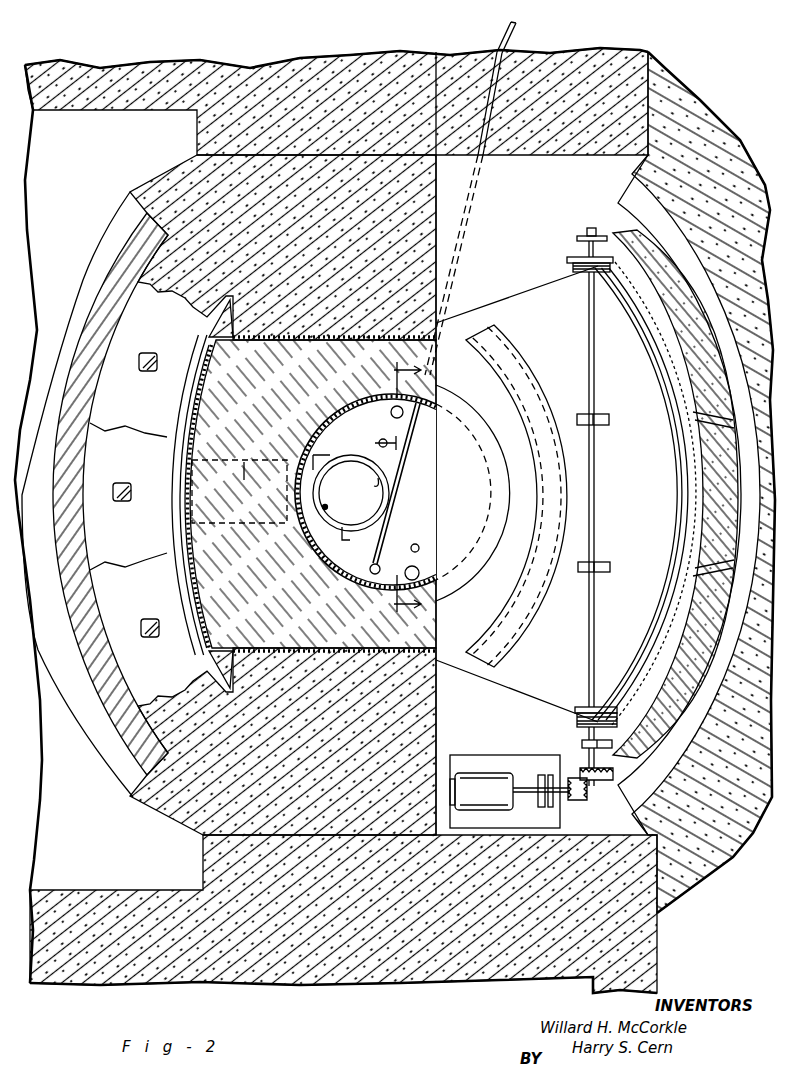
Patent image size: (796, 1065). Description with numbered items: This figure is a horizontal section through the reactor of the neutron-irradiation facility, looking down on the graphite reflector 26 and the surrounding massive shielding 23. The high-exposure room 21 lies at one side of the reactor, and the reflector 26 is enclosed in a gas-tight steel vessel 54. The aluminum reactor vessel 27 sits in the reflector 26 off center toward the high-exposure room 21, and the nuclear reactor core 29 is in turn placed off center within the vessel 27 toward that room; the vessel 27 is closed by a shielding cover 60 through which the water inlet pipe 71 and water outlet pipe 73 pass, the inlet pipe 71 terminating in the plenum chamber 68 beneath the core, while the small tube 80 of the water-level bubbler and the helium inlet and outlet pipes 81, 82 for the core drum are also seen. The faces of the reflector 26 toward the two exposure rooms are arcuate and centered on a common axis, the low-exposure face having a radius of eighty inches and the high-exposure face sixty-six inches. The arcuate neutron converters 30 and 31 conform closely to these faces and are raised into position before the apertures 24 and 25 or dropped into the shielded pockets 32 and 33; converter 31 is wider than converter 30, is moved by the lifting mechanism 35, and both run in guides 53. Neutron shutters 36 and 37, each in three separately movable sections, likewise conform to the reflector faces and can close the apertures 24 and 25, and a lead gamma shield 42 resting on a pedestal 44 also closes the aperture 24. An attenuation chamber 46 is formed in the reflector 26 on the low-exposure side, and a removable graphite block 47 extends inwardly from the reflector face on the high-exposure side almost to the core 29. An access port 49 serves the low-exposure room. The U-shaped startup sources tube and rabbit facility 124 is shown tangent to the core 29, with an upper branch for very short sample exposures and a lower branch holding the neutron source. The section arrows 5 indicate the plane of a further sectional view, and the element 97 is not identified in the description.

The high-exposure room 21 is at (88, 194).
The massive shielding 23 is at (553, 70).
The aperture 24 is at (133, 795).
The aperture 25 is at (642, 811).
The graphite reflector 26 is at (276, 588).
The aluminum reactor vessel 27 is at (337, 415).
The nuclear reactor core 29 is at (363, 493).
The neutron converter 30 is at (193, 558).
The neutron converter 31 is at (696, 477).
The shielded pocket 32 is at (205, 618).
The shielded pocket 33 is at (686, 501).
The lifting mechanism 35 is at (564, 745).
The neutron shutter 36 is at (142, 406).
The neutron shutter 37 is at (712, 312).
The lead gamma shield 42 is at (120, 716).
The pedestal 44 is at (88, 252).
The attenuation chamber 46 is at (521, 372).
The removable block of graphite 47 is at (244, 460).
The access port 49 is at (707, 719).
The guides 53 is at (209, 337).
The gas-tight steel vessel 54 is at (200, 395).
The shielding cover 60 is at (470, 416).
The plenum chamber 68 is at (352, 541).
The water inlet pipe 71 is at (391, 412).
The water outlet pipe 73 is at (407, 569).
The small tube 80 is at (420, 540).
The inlet pipe 81 is at (371, 493).
The outlet pipe 82 is at (336, 513).
The liner shell 97 is at (683, 683).
The startup sources tube and rabbit facility 124 is at (406, 478).
The section line 5 is at (395, 491).